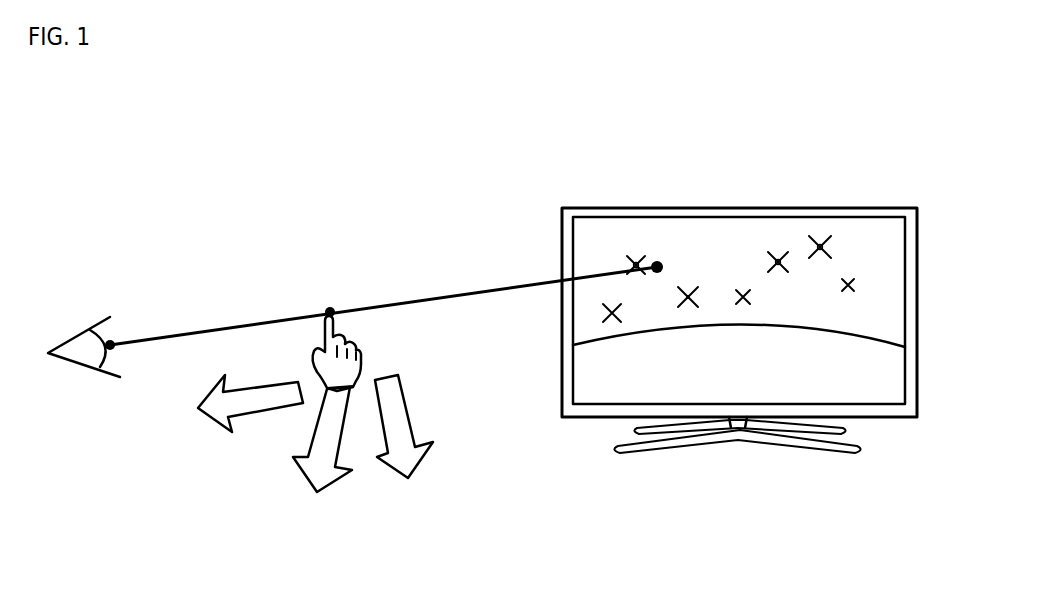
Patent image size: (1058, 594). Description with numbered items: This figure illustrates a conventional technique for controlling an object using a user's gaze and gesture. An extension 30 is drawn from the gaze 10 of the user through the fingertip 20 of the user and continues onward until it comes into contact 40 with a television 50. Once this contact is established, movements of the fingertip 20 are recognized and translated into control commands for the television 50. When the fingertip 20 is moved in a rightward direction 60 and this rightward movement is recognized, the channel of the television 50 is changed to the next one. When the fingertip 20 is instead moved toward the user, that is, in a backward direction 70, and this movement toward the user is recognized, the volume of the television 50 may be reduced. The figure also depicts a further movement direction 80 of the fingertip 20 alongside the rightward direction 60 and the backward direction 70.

The gaze 10 is at (120, 318).
The fingertip 20 is at (331, 306).
The extension 30 is at (217, 328).
The contact 40 is at (657, 261).
The television 50 is at (795, 208).
The rightward direction 60 is at (423, 467).
The backward direction 70 is at (212, 417).
The movement direction arrow 80 is at (338, 477).